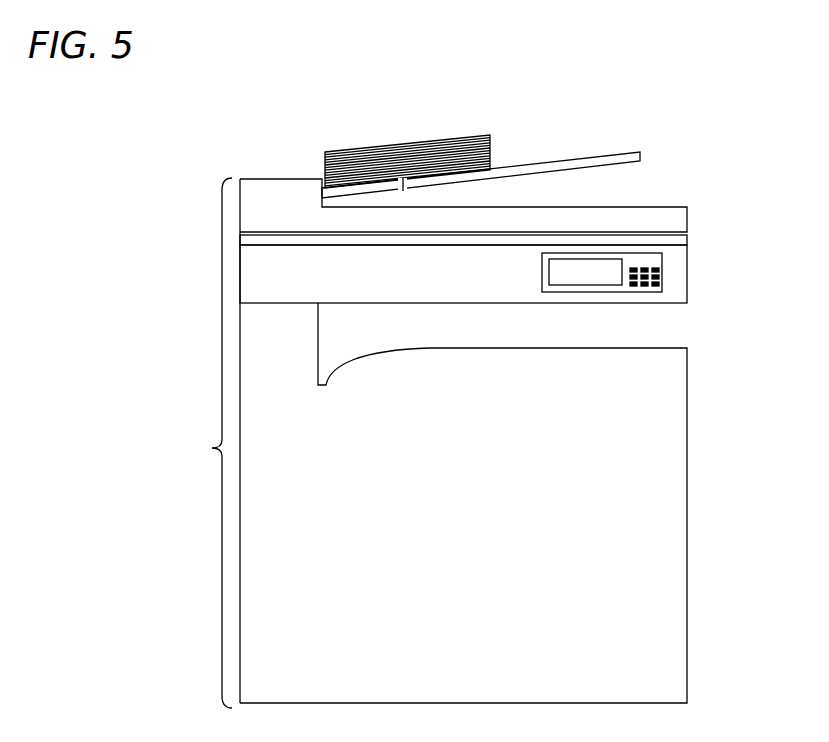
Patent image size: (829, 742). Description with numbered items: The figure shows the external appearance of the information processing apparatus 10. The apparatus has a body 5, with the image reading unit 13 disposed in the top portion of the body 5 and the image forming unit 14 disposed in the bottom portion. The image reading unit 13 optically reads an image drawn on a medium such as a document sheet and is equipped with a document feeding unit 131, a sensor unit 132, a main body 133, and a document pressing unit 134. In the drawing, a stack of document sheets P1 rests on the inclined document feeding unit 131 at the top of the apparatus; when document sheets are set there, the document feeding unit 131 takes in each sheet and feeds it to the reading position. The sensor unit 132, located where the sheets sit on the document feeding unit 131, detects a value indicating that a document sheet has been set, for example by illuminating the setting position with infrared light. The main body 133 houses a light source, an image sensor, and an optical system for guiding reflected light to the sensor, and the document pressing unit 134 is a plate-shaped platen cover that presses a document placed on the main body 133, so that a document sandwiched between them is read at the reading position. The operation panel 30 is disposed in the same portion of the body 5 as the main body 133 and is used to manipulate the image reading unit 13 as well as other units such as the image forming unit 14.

The information processing apparatus 10 is at (158, 166).
The body 5 is at (207, 443).
The document pressing unit 134 is at (655, 222).
The document feeding unit 131 is at (590, 162).
The document sheets P1 is at (398, 143).
The sensor unit 132 is at (408, 188).
The image reading unit 13 is at (730, 267).
The operation panel 30 is at (612, 292).
The main body 133 is at (372, 282).
The image forming unit 14 is at (728, 505).